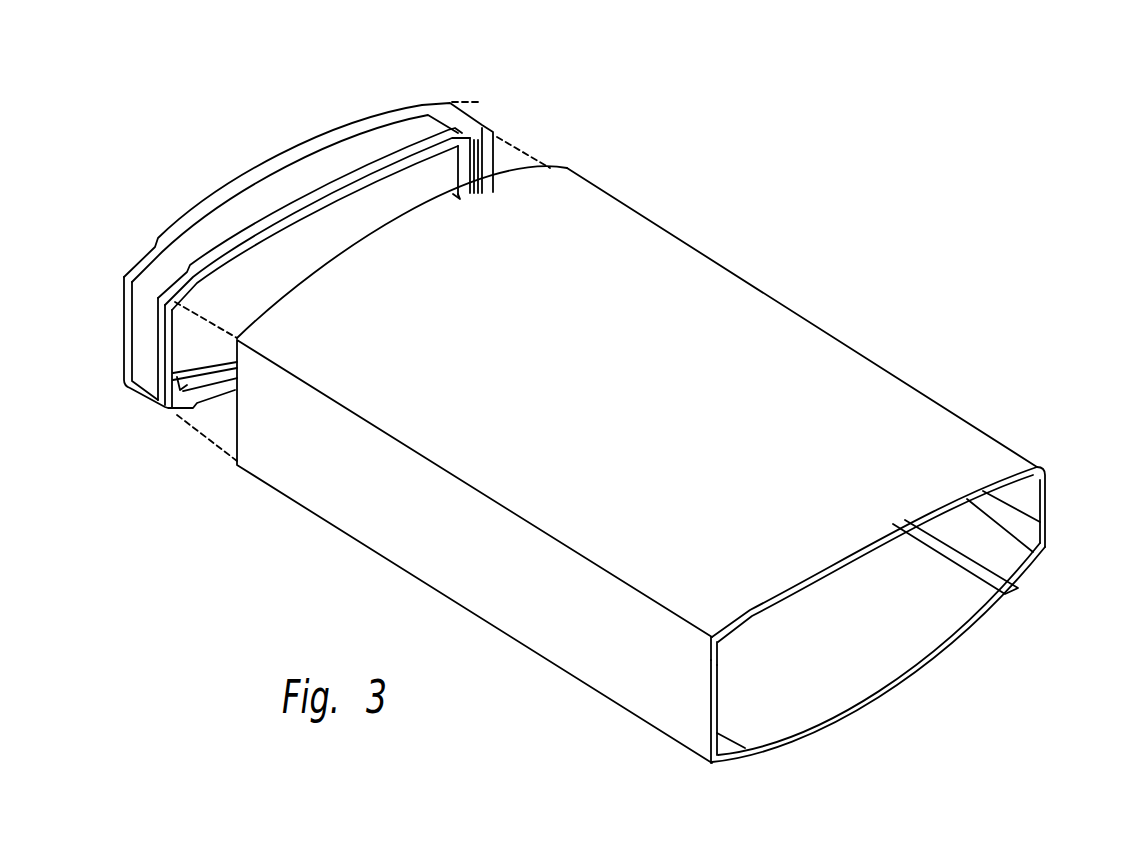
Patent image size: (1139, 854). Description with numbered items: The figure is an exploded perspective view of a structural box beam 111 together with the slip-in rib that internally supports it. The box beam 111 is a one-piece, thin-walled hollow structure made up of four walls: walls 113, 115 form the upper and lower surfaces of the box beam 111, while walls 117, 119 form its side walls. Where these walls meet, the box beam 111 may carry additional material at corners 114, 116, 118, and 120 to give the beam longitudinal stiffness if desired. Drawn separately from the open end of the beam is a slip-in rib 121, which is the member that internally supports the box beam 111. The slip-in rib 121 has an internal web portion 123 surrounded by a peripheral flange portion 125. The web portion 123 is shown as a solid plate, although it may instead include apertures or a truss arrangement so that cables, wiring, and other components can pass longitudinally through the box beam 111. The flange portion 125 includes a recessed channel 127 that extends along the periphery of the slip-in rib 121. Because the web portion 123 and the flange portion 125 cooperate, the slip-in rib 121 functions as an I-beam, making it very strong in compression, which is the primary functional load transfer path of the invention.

The box beam 111 is at (872, 309).
The wall 113 is at (888, 690).
The corner 114 is at (1022, 468).
The wall 115 is at (932, 420).
The corner 116 is at (1030, 568).
The wall 117 is at (1018, 502).
The corner 118 is at (729, 628).
The wall 119 is at (665, 690).
The corner 120 is at (731, 768).
The slip-in rib 121 is at (325, 223).
The web portion 123 is at (237, 268).
The flange portion 125 is at (497, 134).
The recessed channel 127 is at (152, 372).